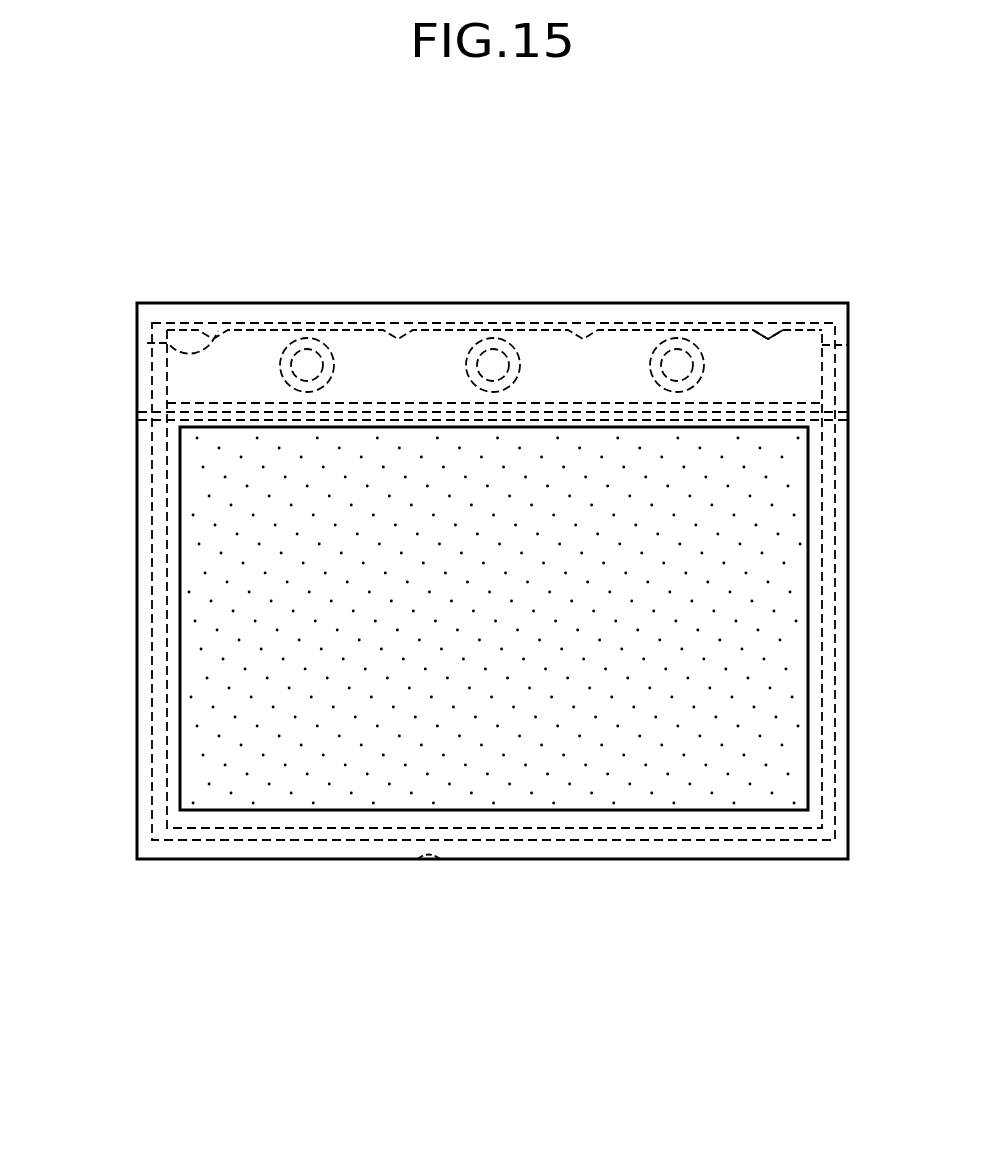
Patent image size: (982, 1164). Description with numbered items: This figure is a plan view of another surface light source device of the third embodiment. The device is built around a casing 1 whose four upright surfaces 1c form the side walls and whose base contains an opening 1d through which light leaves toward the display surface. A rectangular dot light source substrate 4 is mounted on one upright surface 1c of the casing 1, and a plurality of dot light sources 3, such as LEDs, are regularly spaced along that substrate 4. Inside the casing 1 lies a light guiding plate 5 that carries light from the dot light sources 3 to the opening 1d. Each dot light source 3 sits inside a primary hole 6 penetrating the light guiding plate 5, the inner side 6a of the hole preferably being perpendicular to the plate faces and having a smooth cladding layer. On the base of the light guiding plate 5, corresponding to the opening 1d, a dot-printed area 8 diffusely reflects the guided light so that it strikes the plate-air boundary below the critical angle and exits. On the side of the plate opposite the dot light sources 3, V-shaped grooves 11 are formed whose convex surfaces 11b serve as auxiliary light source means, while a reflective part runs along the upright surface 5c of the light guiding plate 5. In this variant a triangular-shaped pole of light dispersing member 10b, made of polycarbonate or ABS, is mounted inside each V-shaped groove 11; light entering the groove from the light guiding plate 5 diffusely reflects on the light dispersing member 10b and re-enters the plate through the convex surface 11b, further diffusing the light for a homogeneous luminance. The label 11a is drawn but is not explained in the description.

The casing 1 is at (272, 860).
The upright surface 1c is at (418, 330).
The opening 1d is at (603, 757).
The dot light source 3 is at (680, 360).
The dot light source substrate 4 is at (452, 356).
The light guiding plate 5 is at (694, 828).
The upright surface of the light guiding plate 5c is at (680, 336).
The primary hole 6 is at (338, 358).
The inner side of the primary hole 6a is at (314, 342).
The dot-printed area 8 is at (504, 775).
The light dispersing member 10b is at (769, 336).
The V-shaped groove 11 is at (592, 303).
The frame engaging portion 11a is at (148, 342).
The convex surface 11b is at (213, 330).